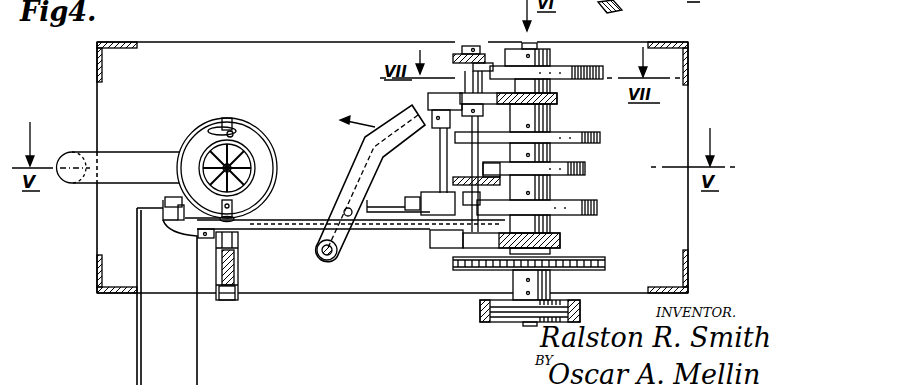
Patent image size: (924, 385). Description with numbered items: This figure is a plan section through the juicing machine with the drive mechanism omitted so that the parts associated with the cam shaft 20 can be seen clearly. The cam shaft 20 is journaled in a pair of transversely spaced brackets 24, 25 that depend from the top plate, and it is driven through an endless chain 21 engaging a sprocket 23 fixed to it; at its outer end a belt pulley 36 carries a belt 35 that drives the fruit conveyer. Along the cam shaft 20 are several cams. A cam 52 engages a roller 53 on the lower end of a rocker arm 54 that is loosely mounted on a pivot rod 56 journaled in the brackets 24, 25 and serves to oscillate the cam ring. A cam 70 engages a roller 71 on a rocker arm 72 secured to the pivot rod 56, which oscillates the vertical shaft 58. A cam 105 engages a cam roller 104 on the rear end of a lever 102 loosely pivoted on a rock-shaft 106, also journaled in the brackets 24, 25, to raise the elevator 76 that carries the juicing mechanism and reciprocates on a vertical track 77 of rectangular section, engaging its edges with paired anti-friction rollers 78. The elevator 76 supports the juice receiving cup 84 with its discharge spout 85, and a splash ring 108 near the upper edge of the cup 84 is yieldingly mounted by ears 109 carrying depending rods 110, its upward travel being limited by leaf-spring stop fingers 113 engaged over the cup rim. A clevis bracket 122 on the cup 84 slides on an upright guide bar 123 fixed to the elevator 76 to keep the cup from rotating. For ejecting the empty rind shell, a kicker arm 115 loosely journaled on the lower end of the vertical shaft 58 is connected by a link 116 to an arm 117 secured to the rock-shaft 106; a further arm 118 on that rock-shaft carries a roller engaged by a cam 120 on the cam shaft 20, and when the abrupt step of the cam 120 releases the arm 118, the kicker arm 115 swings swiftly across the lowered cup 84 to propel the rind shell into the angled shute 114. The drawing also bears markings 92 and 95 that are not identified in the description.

The cam shaft 20 is at (537, 43).
The endless chain 21 is at (605, 263).
The sprocket 23 is at (603, 257).
The bracket 24 is at (560, 243).
The bracket 25 is at (558, 100).
The belt 35 is at (480, 311).
The belt pulley 36 is at (496, 323).
The cam 52 is at (600, 64).
The roller 53 is at (487, 58).
The rocker arm 54 is at (460, 46).
The pivot rod 56 is at (455, 250).
The vertical shaft 58 is at (322, 260).
The cam 70 is at (587, 166).
The roller 71 is at (500, 158).
The rocker arm 72 is at (465, 169).
The elevator 76 is at (238, 268).
The track 77 is at (224, 267).
The anti-friction rollers 78 is at (227, 302).
The juice receiving cup 84 is at (278, 162).
The discharge spout 85 is at (107, 155).
The member 92 is at (653, 0).
The spokes 95 is at (240, 170).
The lever 102 is at (386, 229).
The cam roller 104 is at (507, 195).
The cam 105 is at (597, 208).
The rock-shaft 106 is at (437, 92).
The splash ring 108 is at (254, 152).
The ears 109 is at (234, 134).
The depending rods 110 is at (214, 128).
The leaf-spring stop fingers 113 is at (226, 117).
The shute 114 is at (186, 371).
The kicker arm 115 is at (390, 125).
The link 116 is at (372, 191).
The arm 117 is at (425, 197).
The arm 118 is at (460, 123).
The cam 120 is at (600, 137).
The clevis bracket 122 is at (170, 197).
The guide bar 123 is at (172, 208).